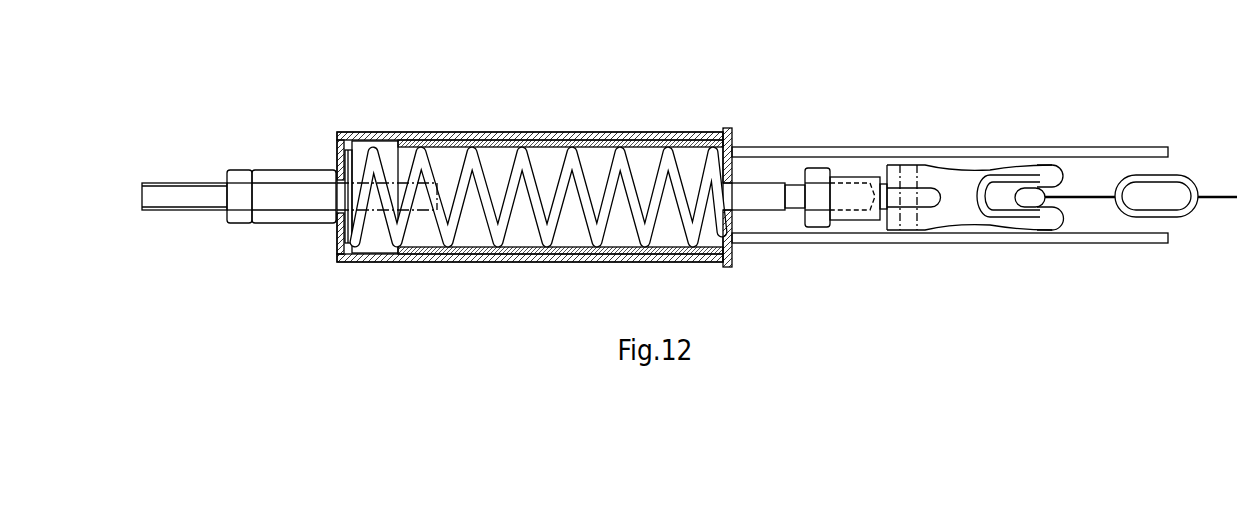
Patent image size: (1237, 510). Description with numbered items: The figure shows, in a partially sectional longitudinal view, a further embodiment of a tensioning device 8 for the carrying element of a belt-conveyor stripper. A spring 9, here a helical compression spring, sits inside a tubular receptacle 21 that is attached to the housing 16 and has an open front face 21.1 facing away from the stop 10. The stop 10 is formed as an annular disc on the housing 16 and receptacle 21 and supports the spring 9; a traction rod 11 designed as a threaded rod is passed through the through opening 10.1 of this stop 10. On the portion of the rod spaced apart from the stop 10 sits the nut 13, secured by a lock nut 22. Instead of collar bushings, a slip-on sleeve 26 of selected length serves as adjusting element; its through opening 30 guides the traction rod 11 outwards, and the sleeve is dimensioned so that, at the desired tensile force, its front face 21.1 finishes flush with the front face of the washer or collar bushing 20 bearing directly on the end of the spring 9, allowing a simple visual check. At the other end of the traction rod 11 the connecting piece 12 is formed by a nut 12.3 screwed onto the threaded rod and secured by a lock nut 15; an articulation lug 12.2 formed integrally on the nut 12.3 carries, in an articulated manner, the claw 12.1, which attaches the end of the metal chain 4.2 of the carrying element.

The tensioning device 8 is at (638, 98).
The lock nut 22 is at (238, 175).
The nut 13 is at (282, 175).
The washer or collar bushing 20 is at (343, 160).
The receptacle 21 is at (500, 253).
The front face 21.1 is at (335, 256).
The slip-on sleeve 26 is at (385, 257).
The through opening 30 is at (337, 243).
The spring 9 is at (569, 157).
The stop 10 is at (728, 173).
The through opening 10.1 is at (731, 178).
The traction rod 11 is at (770, 200).
The lock nut 15 is at (817, 218).
The nut 12.3 is at (857, 180).
The connecting piece 12 is at (965, 180).
The articulation lug 12.2 is at (925, 197).
The claw 12.1 is at (1047, 224).
The housing 16 is at (1132, 150).
The metal chain 4.2 is at (1188, 175).